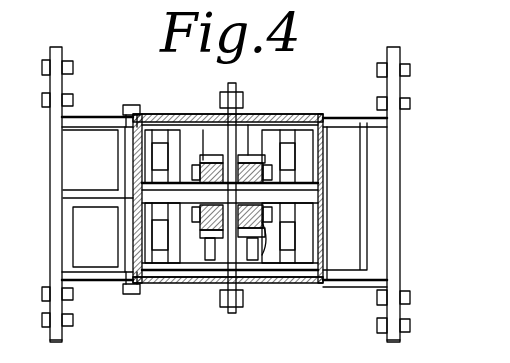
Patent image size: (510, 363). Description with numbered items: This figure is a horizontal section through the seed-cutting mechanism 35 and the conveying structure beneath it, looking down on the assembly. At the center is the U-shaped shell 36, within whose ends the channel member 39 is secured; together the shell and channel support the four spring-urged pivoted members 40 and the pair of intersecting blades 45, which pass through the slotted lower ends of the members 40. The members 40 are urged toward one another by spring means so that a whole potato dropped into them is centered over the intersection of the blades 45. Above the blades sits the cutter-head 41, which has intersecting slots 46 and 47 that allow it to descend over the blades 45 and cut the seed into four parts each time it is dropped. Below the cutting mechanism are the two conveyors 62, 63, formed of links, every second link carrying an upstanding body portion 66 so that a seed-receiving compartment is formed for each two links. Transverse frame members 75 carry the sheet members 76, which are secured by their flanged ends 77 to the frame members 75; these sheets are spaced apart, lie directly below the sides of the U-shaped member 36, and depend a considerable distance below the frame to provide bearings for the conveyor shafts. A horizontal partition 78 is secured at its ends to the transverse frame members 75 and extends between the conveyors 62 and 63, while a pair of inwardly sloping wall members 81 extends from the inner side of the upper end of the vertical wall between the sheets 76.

The seed-cutting mechanism 35 is at (278, 112).
The U-shaped shell 36 is at (325, 150).
The channel member 39 is at (130, 152).
The spring-urged pivoted members 40 is at (248, 125).
The cutter-head 41 is at (250, 262).
The intersecting blades 45 is at (238, 118).
The slot 46 is at (303, 228).
The slot 47 is at (225, 145).
The conveyor 62 is at (312, 285).
The conveyor 63 is at (325, 125).
The upstanding body portion 66 is at (80, 220).
The transverse frame members 75 is at (55, 235).
The sheet members 76 is at (100, 117).
The flanged ends 77 is at (62, 87).
The horizontal partition 78 is at (85, 195).
The inwardly sloping wall members 81 is at (365, 152).